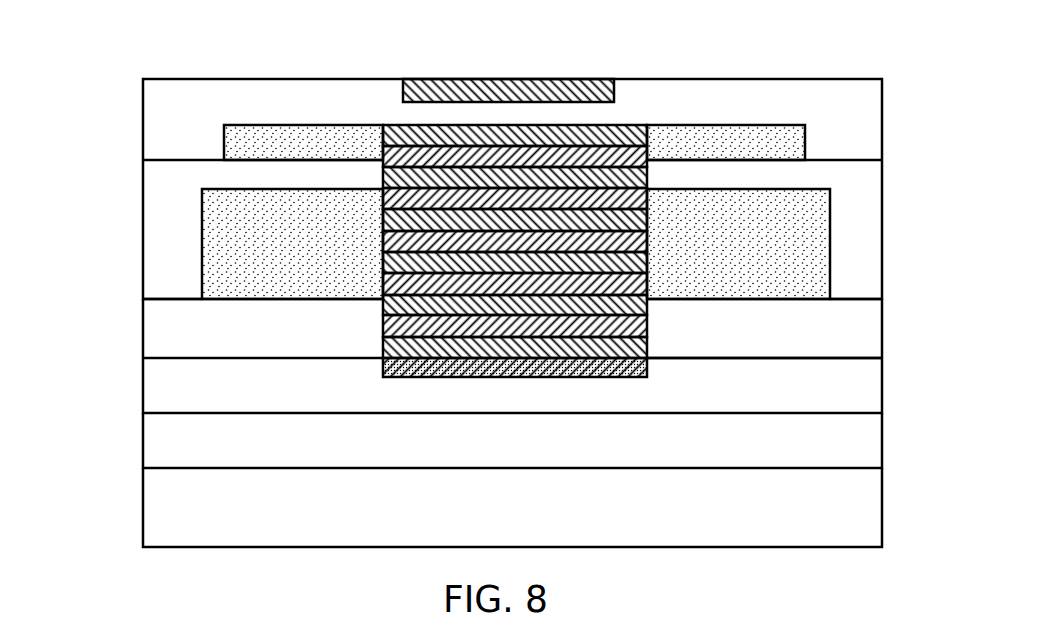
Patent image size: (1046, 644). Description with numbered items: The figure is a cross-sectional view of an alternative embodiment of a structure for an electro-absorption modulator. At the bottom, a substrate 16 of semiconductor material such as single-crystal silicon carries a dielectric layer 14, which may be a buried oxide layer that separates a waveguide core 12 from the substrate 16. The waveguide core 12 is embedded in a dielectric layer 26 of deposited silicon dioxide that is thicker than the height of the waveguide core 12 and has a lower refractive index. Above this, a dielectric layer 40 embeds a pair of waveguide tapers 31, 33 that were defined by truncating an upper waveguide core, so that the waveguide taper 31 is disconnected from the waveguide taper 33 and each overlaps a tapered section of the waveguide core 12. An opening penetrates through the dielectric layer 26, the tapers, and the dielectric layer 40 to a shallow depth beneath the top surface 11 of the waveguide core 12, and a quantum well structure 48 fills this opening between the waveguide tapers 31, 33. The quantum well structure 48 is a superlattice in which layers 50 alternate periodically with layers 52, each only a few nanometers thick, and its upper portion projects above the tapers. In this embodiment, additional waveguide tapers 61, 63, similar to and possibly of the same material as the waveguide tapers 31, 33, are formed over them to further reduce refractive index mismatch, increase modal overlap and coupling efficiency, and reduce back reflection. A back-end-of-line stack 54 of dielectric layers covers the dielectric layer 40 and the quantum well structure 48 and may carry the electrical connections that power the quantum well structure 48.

The back-end-of-line stack 54 is at (180, 100).
The waveguide taper 61 is at (248, 145).
The waveguide taper 63 is at (775, 140).
The dielectric layer 40 is at (180, 195).
The waveguide taper 31 is at (248, 254).
The waveguide taper 33 is at (780, 250).
The dielectric layer 26 is at (195, 333).
The waveguide core 12 is at (195, 389).
The top surface 11 is at (778, 357).
The dielectric layer 14 is at (195, 440).
The substrate 16 is at (195, 511).
The quantum well structure 48 is at (365, 95).
The layers 50 is at (593, 328).
The layers 52 is at (413, 348).